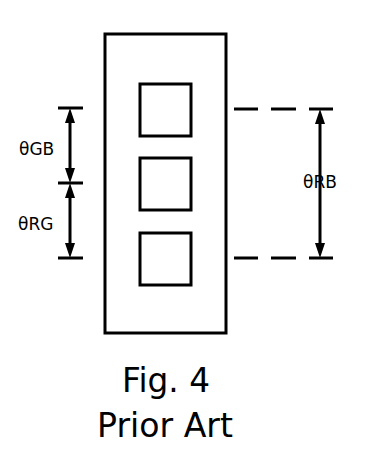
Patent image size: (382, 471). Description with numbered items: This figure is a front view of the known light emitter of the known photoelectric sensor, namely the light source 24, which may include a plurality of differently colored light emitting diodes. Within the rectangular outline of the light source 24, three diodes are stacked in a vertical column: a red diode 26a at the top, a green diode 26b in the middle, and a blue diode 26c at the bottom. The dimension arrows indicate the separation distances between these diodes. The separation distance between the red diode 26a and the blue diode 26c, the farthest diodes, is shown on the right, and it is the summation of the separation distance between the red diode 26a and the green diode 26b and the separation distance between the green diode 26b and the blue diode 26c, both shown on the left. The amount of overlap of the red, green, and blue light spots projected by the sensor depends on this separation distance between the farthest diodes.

The light source 24 is at (127, 33).
The red diode 26a is at (182, 98).
The green diode 26b is at (181, 198).
The blue diode 26c is at (181, 262).